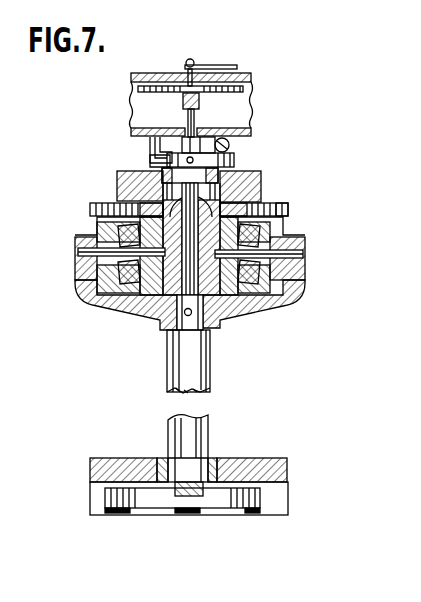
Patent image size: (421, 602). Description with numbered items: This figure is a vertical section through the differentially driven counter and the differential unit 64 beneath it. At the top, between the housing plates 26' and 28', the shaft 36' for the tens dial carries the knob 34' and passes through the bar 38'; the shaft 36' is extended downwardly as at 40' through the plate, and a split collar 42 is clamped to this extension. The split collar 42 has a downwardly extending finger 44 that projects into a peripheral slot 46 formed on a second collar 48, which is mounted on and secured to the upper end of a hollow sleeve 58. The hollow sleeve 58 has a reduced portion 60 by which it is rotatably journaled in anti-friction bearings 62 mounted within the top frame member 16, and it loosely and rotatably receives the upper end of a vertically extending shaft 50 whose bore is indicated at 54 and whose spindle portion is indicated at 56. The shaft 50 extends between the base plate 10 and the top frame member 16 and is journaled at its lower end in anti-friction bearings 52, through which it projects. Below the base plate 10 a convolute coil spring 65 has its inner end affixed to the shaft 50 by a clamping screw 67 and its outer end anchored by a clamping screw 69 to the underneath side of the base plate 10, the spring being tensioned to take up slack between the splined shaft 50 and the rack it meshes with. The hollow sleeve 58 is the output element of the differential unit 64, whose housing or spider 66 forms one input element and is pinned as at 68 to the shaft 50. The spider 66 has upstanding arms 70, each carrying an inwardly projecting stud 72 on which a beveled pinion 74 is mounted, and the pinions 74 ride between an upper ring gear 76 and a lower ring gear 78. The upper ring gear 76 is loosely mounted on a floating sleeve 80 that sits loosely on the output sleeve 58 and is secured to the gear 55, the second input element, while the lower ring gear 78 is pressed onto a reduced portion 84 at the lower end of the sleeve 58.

The base plate 10 is at (275, 462).
The top frame member 16 is at (262, 178).
The housing top plate 26' is at (203, 93).
The housing bottom plate 28' is at (207, 121).
The adjusting knob 34' is at (217, 65).
The shaft for the tens dial 36' is at (209, 115).
The cross bar 38' is at (212, 85).
The downward extension of the tens dial shaft 40' is at (175, 111).
The split collar 42 is at (204, 141).
The finger 44 is at (163, 153).
The peripheral slot 46 is at (152, 160).
The second collar 48 is at (235, 160).
The shaft 50 is at (207, 355).
The anti-friction bearings 52 is at (217, 460).
The shaft bore 54 is at (202, 373).
The gear 55 is at (287, 189).
The spindle 56 is at (190, 239).
The hollow sleeve 58 is at (191, 239).
The reduced portion 60 is at (140, 197).
The anti-friction bearings 62 is at (157, 170).
The differential unit 64 is at (290, 345).
The convolute coil spring 65 is at (253, 515).
The housing or spider 66 is at (295, 303).
The clamping screw 67 is at (197, 515).
The pin 68 is at (191, 312).
The clamping screw 69 is at (120, 512).
The upstanding arms 70 is at (74, 239).
The stud 72 is at (93, 275).
The beveled pinion 74 is at (108, 230).
The upper ring gear 76 is at (277, 227).
The lower ring gear 78 is at (78, 292).
The floating sleeve 80 is at (112, 220).
The reduced portion 84 is at (162, 321).